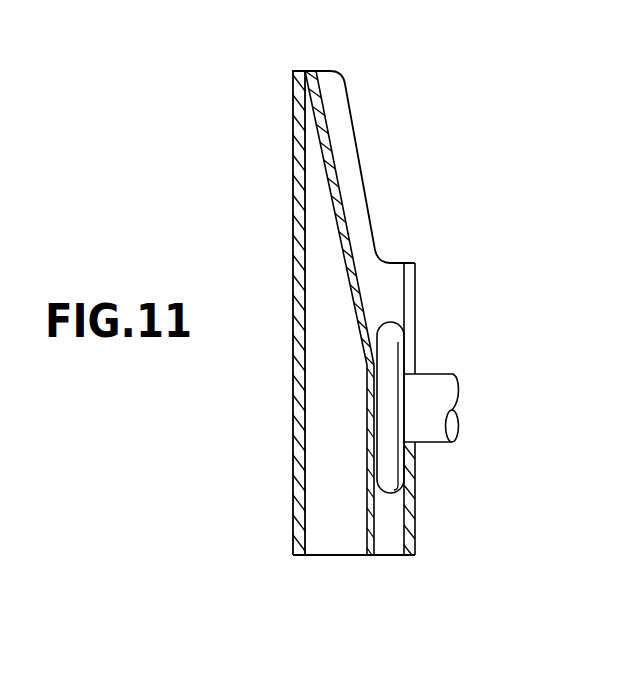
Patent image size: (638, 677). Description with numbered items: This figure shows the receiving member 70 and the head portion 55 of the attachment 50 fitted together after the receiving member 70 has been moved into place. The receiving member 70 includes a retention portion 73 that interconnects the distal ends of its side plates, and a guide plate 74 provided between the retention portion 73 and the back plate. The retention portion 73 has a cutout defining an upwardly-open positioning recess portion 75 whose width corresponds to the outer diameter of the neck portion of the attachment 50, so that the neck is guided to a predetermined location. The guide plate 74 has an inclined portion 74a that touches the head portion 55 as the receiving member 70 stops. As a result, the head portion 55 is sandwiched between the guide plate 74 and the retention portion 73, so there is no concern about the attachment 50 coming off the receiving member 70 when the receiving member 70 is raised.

The receiving member 70 is at (266, 60).
The inclined portion 74a is at (330, 147).
The guide plate 74 is at (376, 521).
The positioning recess portion 75 is at (413, 312).
The head portion 55 is at (385, 320).
The attachment 50 is at (497, 403).
The retention portion 73 is at (417, 494).